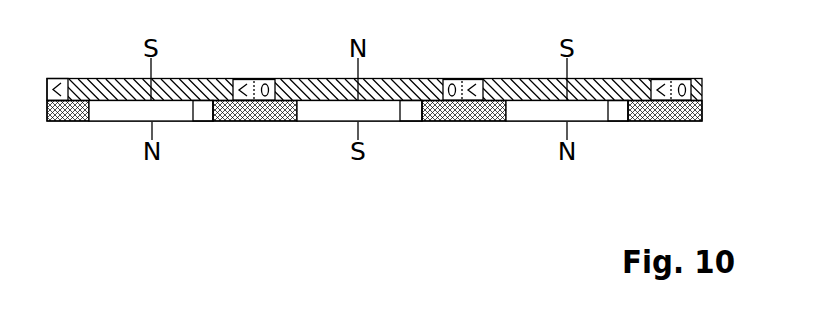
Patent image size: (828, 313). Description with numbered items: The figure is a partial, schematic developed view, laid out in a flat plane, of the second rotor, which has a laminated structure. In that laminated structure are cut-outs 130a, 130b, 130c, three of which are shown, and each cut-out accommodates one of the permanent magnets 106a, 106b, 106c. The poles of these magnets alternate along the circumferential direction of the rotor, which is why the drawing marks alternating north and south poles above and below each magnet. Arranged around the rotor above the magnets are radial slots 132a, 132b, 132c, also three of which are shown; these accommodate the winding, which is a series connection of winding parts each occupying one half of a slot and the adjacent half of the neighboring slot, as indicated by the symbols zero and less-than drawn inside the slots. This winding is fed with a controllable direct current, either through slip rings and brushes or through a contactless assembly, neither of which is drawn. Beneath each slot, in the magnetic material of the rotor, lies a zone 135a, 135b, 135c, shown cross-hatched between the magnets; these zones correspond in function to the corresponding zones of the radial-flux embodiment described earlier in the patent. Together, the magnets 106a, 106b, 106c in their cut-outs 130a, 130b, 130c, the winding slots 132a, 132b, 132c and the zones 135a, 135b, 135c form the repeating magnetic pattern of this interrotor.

The permanent magnet 106a is at (110, 110).
The permanent magnet 106b is at (317, 110).
The permanent magnet 106c is at (526, 110).
The cut-out 130a is at (193, 101).
The cut-out 130b is at (400, 101).
The cut-out 130c is at (608, 101).
The radial slot 132a is at (243, 80).
The radial slot 132b is at (452, 80).
The radial slot 132c is at (662, 80).
The zone 135a is at (257, 110).
The zone 135b is at (462, 110).
The zone 135c is at (672, 110).